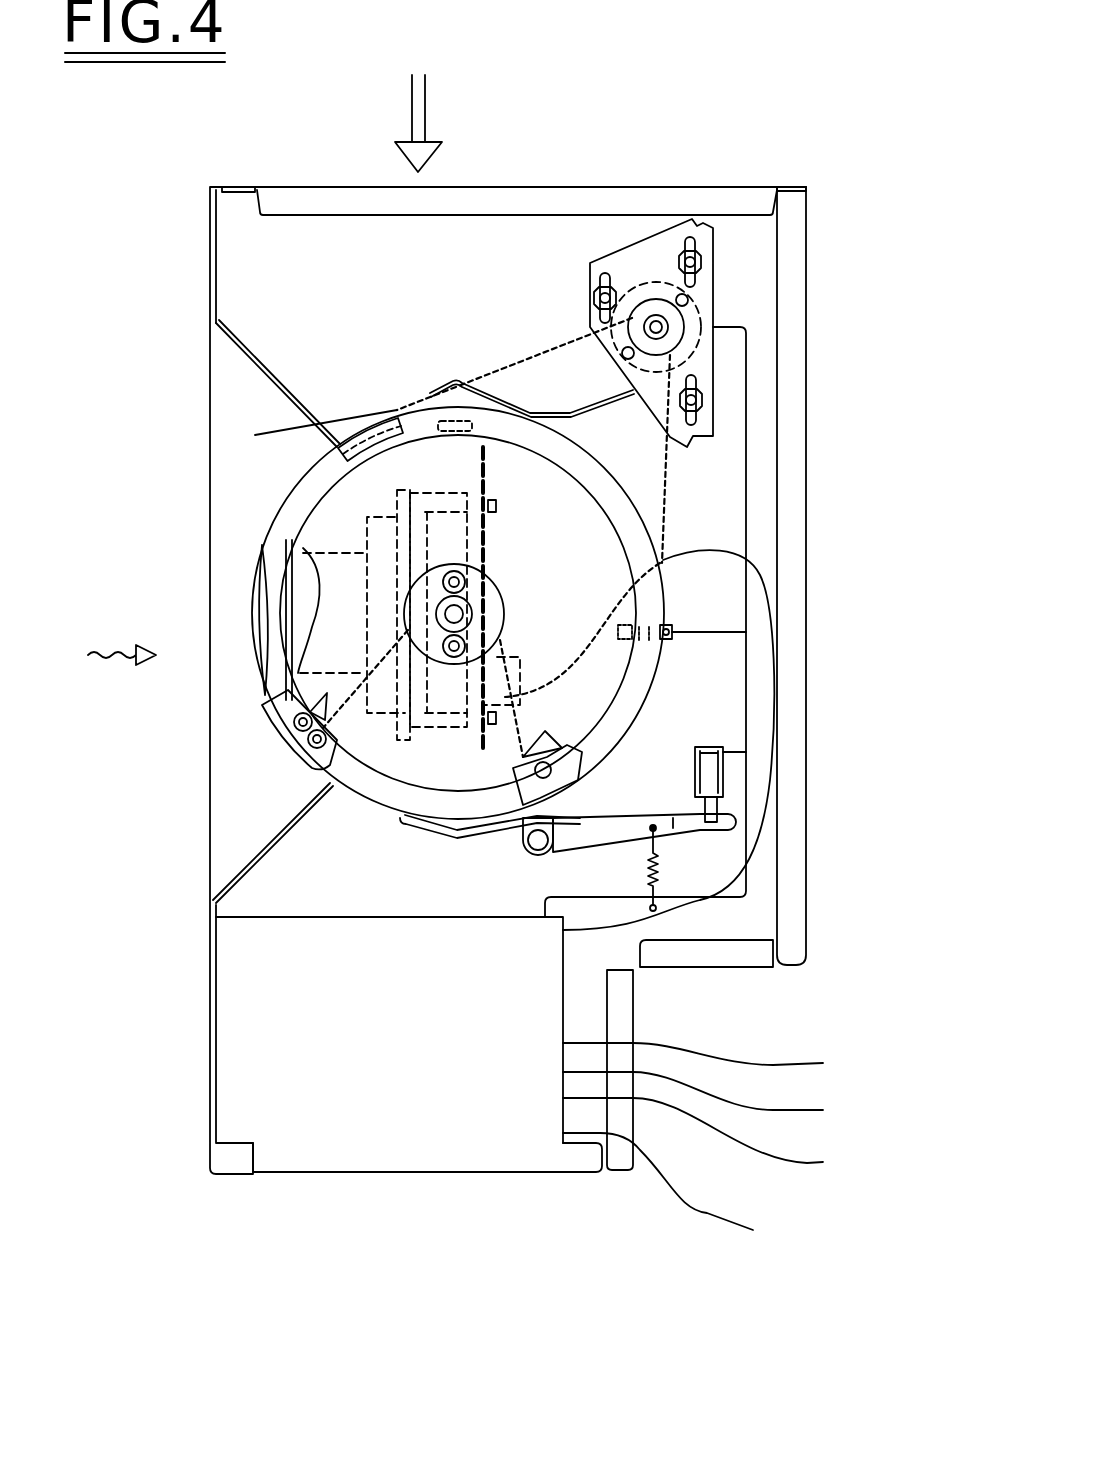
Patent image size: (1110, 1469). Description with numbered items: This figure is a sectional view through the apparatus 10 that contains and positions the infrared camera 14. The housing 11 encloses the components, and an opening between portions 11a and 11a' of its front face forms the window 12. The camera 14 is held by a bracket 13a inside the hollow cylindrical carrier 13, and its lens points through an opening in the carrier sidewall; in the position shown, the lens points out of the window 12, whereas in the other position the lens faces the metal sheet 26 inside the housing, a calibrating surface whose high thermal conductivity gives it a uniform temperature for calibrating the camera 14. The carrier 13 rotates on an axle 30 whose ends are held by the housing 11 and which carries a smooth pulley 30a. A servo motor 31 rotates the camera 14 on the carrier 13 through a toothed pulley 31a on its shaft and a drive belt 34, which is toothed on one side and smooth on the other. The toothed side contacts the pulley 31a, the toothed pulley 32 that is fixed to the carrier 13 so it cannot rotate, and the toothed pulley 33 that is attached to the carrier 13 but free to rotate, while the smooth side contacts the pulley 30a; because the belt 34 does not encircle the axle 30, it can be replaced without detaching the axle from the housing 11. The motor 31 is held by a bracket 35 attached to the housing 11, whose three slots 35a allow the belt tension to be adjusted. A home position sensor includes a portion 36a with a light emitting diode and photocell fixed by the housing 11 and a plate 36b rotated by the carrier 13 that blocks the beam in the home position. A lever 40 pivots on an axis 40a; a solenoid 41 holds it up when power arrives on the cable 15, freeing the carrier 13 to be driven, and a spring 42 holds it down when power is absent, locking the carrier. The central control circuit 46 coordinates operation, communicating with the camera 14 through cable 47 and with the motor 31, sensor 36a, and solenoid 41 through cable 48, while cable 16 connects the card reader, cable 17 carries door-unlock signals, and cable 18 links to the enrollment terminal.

The apparatus 10 is at (418, 103).
The housing 11 is at (807, 383).
The housing front face portion 11a is at (246, 383).
The housing front face portion 11a' is at (216, 843).
The window 12 is at (105, 655).
The carrier 13 is at (267, 508).
The bracket 13a is at (482, 472).
The infrared camera 14 is at (330, 616).
The cable 15 is at (753, 1230).
The cable 16 is at (823, 1162).
The cable 17 is at (823, 1110).
The cable 18 is at (823, 1063).
The metal sheet 26 is at (463, 388).
The axle 30 is at (440, 620).
The smooth pulley 30a is at (403, 597).
The servo motor 31 is at (696, 302).
The toothed pulley 31a is at (657, 320).
The toothed pulley 32 is at (327, 695).
The toothed pulley 33 is at (513, 742).
The drive belt 34 is at (458, 385).
The bracket 35 is at (713, 350).
The slots 35a is at (695, 228).
The home position sensor portion 36a is at (677, 633).
The home position sensor plate 36b is at (433, 427).
The lever 40 is at (697, 833).
The pivot axis 40a is at (553, 853).
The solenoid 41 is at (723, 767).
The spring 42 is at (657, 873).
The central control circuit 46 is at (389, 1030).
The cable 47 is at (768, 602).
The cable 48 is at (750, 528).